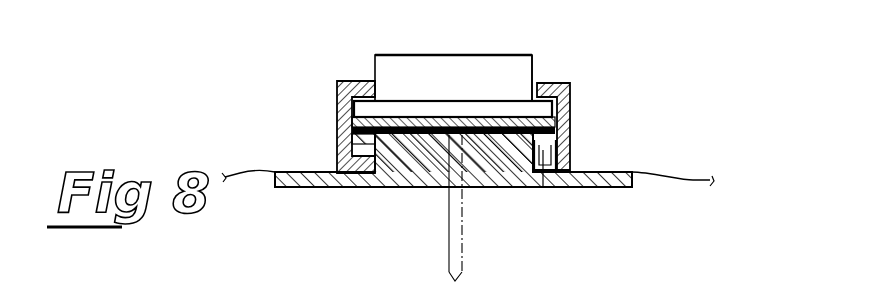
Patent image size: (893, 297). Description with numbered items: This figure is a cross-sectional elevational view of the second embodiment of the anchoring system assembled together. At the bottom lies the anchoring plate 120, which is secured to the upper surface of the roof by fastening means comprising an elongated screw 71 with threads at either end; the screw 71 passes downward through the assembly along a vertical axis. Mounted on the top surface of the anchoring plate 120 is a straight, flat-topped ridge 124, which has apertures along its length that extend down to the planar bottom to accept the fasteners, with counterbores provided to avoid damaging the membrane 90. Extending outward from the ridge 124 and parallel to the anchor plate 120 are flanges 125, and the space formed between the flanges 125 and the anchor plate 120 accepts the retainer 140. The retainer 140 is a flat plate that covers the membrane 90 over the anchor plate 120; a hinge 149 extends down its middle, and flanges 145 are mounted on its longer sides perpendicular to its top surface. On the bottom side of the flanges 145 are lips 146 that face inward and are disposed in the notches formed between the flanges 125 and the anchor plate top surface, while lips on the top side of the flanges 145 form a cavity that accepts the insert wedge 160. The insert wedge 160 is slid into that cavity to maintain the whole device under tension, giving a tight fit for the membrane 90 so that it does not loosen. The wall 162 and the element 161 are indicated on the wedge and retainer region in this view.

The membrane 90 is at (693, 180).
The anchoring plate 120 is at (331, 192).
The ridge 124 is at (393, 188).
The screw 71 is at (450, 255).
The insert wedge 160 is at (515, 52).
The housing side wall 162 is at (533, 63).
The plate 161 is at (400, 101).
The hinge 149 is at (460, 101).
The lips 146 is at (570, 84).
The retainer 140 is at (572, 113).
The flanges 145 is at (572, 148).
The flanges 125 is at (543, 188).